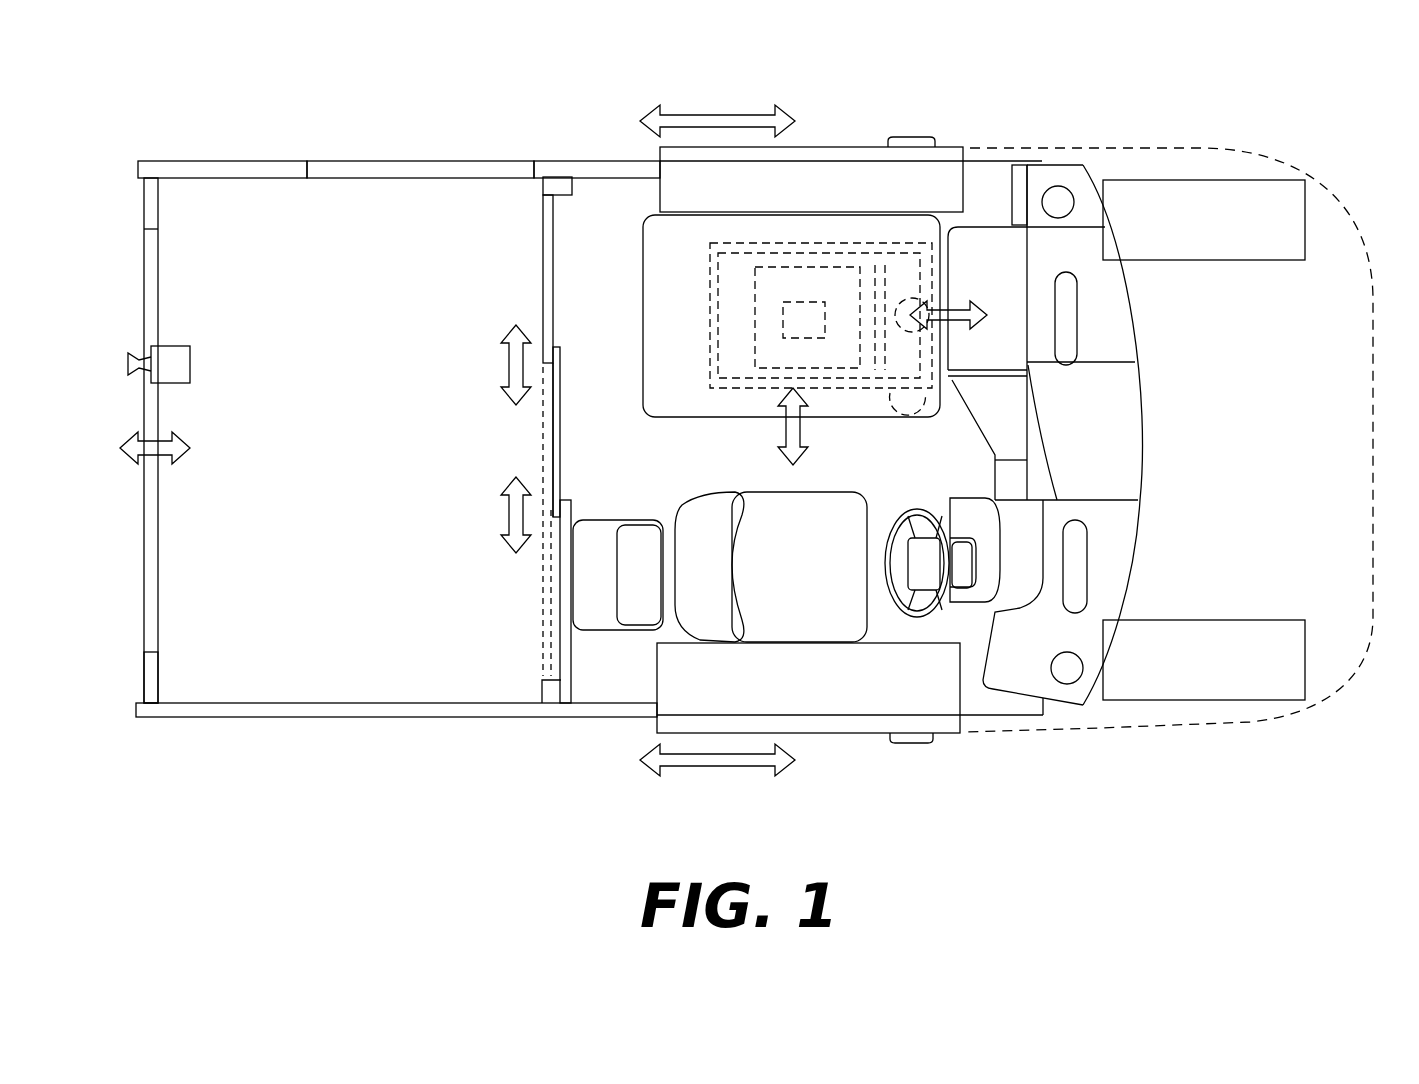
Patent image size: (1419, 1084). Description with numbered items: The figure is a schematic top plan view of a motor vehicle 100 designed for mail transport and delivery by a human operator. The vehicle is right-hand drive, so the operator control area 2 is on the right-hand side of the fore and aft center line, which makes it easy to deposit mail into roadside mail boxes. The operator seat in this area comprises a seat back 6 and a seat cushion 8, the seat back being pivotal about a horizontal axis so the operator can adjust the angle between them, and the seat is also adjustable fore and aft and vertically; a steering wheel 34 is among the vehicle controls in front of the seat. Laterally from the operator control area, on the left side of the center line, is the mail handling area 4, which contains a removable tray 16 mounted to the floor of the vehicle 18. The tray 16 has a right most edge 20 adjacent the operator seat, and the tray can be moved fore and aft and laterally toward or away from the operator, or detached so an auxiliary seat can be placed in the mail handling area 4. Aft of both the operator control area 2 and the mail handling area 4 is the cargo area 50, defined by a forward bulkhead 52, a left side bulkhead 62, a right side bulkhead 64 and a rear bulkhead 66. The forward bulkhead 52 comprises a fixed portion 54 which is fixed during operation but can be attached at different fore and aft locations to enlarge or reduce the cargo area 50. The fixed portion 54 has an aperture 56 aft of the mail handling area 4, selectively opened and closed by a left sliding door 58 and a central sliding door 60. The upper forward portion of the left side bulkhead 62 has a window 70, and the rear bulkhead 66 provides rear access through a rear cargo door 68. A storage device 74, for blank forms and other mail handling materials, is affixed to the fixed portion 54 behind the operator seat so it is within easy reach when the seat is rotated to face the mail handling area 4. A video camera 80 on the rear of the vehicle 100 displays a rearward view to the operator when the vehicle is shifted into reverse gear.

The vehicle 100 is at (1389, 210).
The operator control area 2 is at (926, 452).
The mail handling area 4 is at (559, 441).
The seat back 6 is at (714, 576).
The seat cushion 8 is at (799, 576).
The removable tray 16 is at (686, 266).
The floor of the vehicle 18 is at (849, 459).
The right most edge 20 is at (815, 345).
The steering wheel 34 is at (917, 510).
The cargo area 50 is at (388, 427).
The forward bulkhead 52 is at (550, 690).
The fixed portion 54 is at (565, 573).
The aperture 56 is at (559, 197).
The left sliding door 58 is at (553, 310).
The central sliding door 60 is at (560, 410).
The left side bulkhead 62 is at (278, 162).
The right side bulkhead 64 is at (310, 708).
The rear bulkhead 66 is at (149, 681).
The rear cargo door 68 is at (147, 532).
The window 70 is at (428, 162).
The storage device 74 is at (642, 520).
The video camera 80 is at (180, 365).